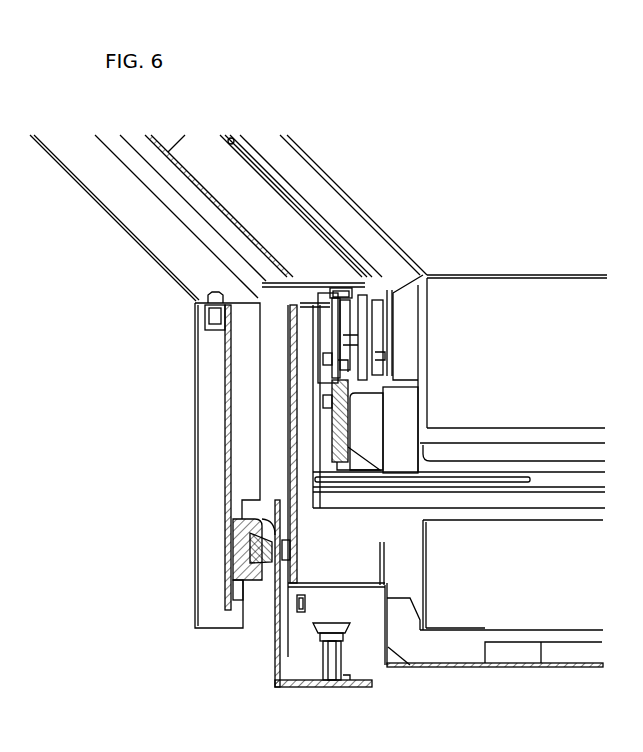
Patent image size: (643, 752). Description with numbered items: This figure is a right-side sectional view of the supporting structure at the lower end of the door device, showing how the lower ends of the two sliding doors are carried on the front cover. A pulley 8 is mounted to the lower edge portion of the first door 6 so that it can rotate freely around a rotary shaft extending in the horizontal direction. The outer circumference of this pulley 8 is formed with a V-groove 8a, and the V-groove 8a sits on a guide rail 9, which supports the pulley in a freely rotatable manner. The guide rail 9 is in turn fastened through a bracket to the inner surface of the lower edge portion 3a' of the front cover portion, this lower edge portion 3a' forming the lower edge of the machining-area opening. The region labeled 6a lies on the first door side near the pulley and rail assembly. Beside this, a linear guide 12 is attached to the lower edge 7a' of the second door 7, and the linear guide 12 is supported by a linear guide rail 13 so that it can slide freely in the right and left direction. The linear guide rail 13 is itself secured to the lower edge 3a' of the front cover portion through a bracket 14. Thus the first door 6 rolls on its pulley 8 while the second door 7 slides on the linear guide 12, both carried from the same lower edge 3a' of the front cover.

The first door 6 is at (192, 218).
The second door 7 is at (162, 278).
The panel bracket 6a is at (367, 322).
The pulley 8 is at (330, 307).
The V-groove 8a is at (338, 356).
The guide rail 9 is at (340, 389).
The lower edge portion of the front cover portion 3a' is at (323, 481).
The lower edge of the second door 7a' is at (199, 460).
The linear guide 12 is at (247, 527).
The linear guide rail 13 is at (258, 516).
The bracket 14 is at (275, 648).